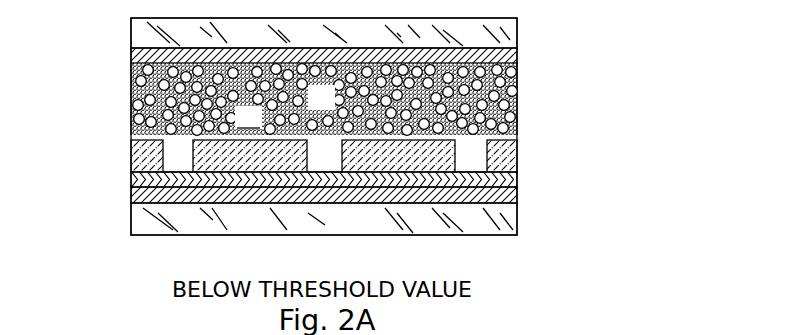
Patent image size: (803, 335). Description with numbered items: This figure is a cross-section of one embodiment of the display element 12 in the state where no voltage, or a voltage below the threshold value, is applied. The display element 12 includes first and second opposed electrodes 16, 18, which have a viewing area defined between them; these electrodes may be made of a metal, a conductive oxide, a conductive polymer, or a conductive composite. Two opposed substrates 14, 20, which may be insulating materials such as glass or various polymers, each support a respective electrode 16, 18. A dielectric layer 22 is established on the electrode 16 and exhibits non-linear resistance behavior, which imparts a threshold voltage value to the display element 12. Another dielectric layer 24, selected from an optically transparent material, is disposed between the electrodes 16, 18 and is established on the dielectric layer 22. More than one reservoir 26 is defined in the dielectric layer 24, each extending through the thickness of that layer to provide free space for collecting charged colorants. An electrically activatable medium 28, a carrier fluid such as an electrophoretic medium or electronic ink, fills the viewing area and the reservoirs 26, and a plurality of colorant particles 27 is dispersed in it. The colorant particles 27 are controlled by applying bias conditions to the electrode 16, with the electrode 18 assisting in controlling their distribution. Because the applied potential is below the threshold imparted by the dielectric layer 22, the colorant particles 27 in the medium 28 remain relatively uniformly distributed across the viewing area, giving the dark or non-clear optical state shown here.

The display element 12 is at (563, 42).
The substrate 14 is at (508, 216).
The first electrode 16 is at (145, 196).
The second electrode 18 is at (145, 53).
The substrate 20 is at (145, 33).
The dielectric layer 22 is at (512, 181).
The dielectric layer 24 is at (508, 156).
The reservoir 26 is at (308, 158).
The colorant particles 27 is at (511, 91).
The electrically activatable medium 28 is at (324, 108).